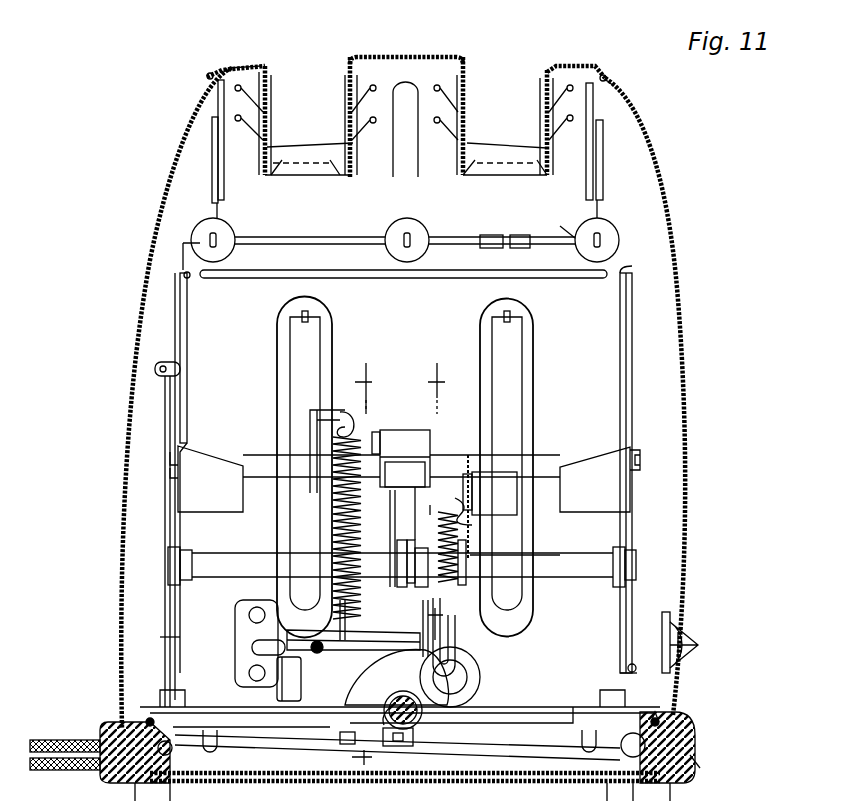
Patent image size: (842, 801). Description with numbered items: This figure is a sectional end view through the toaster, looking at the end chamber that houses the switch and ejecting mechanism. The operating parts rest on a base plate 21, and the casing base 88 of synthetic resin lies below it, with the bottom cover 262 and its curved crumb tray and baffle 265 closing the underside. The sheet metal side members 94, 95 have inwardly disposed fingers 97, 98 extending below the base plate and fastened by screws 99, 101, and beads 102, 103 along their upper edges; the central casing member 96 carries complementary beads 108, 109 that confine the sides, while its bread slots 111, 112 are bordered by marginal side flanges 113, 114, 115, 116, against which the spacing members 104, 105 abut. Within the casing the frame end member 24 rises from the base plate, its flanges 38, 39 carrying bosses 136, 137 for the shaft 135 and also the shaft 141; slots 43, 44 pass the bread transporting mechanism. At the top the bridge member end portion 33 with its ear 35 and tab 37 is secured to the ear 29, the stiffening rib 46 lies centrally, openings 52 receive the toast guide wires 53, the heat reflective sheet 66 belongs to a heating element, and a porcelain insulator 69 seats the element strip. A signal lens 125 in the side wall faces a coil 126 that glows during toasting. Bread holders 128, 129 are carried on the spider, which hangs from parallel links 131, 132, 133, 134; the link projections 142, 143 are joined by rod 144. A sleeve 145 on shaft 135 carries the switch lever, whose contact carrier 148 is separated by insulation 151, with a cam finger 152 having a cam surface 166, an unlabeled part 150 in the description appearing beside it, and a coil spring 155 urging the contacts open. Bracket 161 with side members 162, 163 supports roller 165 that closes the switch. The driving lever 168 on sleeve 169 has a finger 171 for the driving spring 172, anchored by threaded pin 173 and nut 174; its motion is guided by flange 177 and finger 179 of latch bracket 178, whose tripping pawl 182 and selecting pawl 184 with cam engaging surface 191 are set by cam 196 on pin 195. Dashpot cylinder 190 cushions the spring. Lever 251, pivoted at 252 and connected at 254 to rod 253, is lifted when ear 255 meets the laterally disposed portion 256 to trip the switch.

The base plate 21 is at (530, 712).
The end member 24 is at (562, 356).
The ear 29 is at (520, 236).
The end portion 33 is at (405, 220).
The ear 35 is at (490, 235).
The tab 37 is at (568, 223).
The flange 38 is at (626, 618).
The flange 39 is at (187, 618).
The slot 43 is at (278, 352).
The slot 44 is at (480, 338).
The stiffening rib 46 is at (404, 88).
The opening 52 is at (437, 85).
The toast guide wire 53 is at (466, 120).
The heat reflective sheet 66 is at (212, 170).
The porcelain insulator 69 is at (580, 250).
The base 88 is at (690, 755).
The side member 94 is at (128, 346).
The side member 95 is at (682, 270).
The central casing member 96 is at (394, 57).
The finger 97 is at (110, 730).
The finger 98 is at (690, 730).
The screw 99 is at (148, 718).
The screw 101 is at (655, 712).
The bead 102 is at (208, 73).
The bead 103 is at (606, 76).
The spacing member 104 is at (238, 66).
The spacing member 105 is at (575, 70).
The bead 108 is at (205, 77).
The bead 109 is at (612, 80).
The slot 111 is at (346, 100).
The slot 112 is at (465, 100).
The marginal side flange 113 is at (266, 68).
The marginal side flange 114 is at (350, 58).
The marginal side flange 115 is at (440, 118).
The marginal side flange 116 is at (547, 72).
The signal lens 125 is at (690, 640).
The coil 126 is at (633, 664).
The bread holder 128 is at (510, 323).
The bread holder 129 is at (312, 320).
The parallel link 131 is at (626, 365).
The parallel link 132 is at (628, 540).
The parallel link 133 is at (176, 290).
The parallel link 134 is at (176, 528).
The shaft 135 is at (540, 556).
The boss 136 is at (616, 575).
The boss 137 is at (192, 560).
The shaft 141 is at (538, 460).
The link projection 142 is at (597, 470).
The link projection 143 is at (206, 470).
The rod 144 is at (497, 455).
The sleeve 145 is at (460, 585).
The contact carrier 148 is at (452, 647).
The spring 150 is at (436, 548).
The insulation 151 is at (425, 641).
The cam finger 152 is at (444, 544).
The coil spring 155 is at (470, 520).
The bracket 161 is at (466, 462).
The side member 162 is at (388, 515).
The side member 163 is at (420, 520).
The roller 165 is at (397, 555).
The cam surface 166 is at (405, 458).
The driving lever 168 is at (310, 550).
The sleeve 169 is at (373, 450).
The finger 171 is at (318, 415).
The driving spring 172 is at (352, 418).
The threaded pin 173 is at (340, 748).
The nut 174 is at (395, 746).
The flange 177 is at (289, 679).
The latch bracket 178 is at (229, 679).
The finger 179 is at (292, 647).
The tripping pawl 182 is at (332, 615).
The selecting pawl 184 is at (310, 728).
The cylinder 190 is at (490, 493).
The cam engaging surface 191 is at (481, 677).
The pin 195 is at (420, 718).
The cam 196 is at (397, 664).
The lever 251 is at (397, 747).
The pivot 252 is at (622, 756).
The rod 253 is at (160, 637).
The pivotal connection 254 is at (170, 754).
The ear 255 is at (170, 362).
The laterally disposed portion 256 is at (163, 372).
The bottom cover 262 is at (478, 783).
The crumb tray and baffle 265 is at (420, 776).